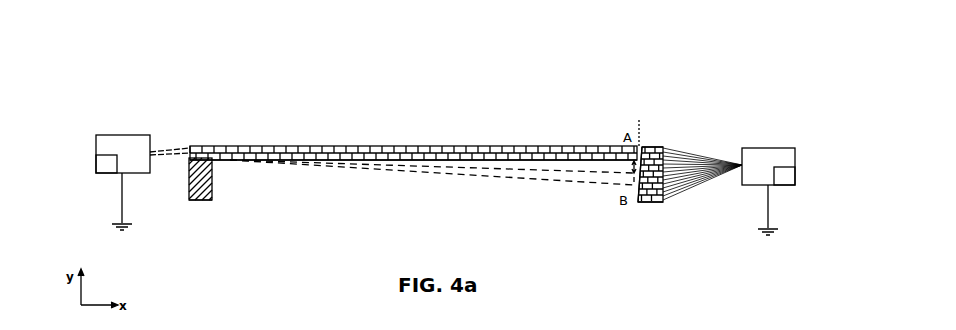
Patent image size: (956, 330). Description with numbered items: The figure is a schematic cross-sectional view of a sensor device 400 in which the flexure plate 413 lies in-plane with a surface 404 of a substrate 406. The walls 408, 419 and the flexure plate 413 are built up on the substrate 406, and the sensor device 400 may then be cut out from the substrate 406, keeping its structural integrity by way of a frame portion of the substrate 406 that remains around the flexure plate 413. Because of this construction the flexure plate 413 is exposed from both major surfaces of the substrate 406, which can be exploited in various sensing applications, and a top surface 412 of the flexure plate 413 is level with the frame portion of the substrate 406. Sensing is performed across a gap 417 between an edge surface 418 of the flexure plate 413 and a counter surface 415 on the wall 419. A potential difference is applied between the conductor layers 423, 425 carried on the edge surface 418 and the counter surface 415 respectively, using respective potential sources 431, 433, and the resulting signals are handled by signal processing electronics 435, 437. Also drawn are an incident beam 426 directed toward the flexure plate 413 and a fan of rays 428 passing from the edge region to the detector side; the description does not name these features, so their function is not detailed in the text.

The sensor device 400 is at (366, 107).
The surface of the substrate 404 is at (232, 161).
The substrate 406 is at (217, 161).
The wall 408 is at (201, 203).
The top surface of the flexure plate 412 is at (285, 146).
The flexure plate 413 is at (428, 142).
The counter surface 415 is at (632, 182).
The gap 417 is at (636, 118).
The edge surface of the flexure plate 418 is at (645, 146).
The wall 419 is at (650, 204).
The conductor layer 423 is at (193, 198).
The conductor layer 425 is at (662, 147).
The incident light beam 426 is at (173, 149).
The diverging light rays 428 is at (695, 183).
The potential source 431 is at (108, 134).
The potential source 433 is at (783, 147).
The signal processing electronics 435 is at (103, 166).
The signal processing electronics 437 is at (784, 186).